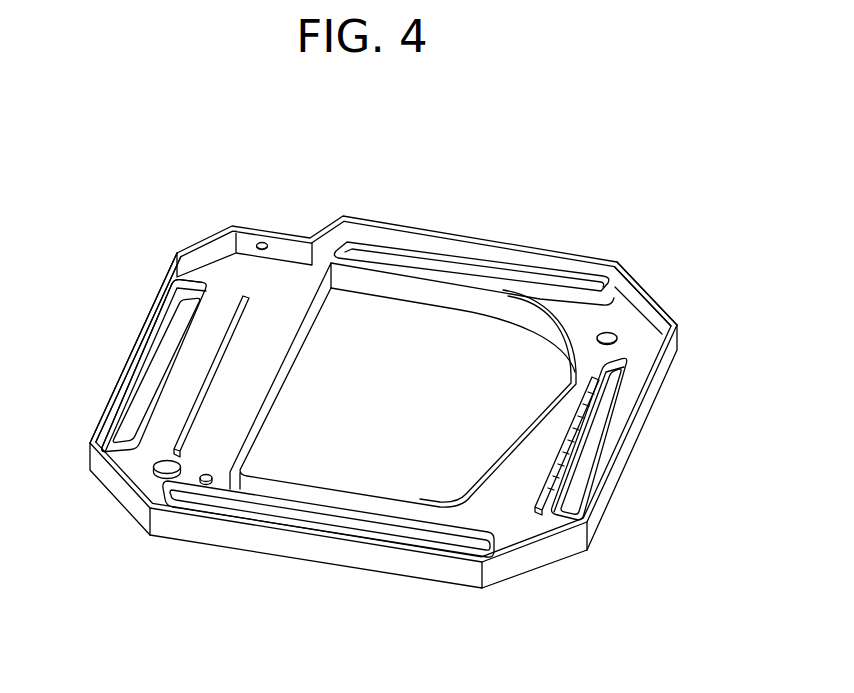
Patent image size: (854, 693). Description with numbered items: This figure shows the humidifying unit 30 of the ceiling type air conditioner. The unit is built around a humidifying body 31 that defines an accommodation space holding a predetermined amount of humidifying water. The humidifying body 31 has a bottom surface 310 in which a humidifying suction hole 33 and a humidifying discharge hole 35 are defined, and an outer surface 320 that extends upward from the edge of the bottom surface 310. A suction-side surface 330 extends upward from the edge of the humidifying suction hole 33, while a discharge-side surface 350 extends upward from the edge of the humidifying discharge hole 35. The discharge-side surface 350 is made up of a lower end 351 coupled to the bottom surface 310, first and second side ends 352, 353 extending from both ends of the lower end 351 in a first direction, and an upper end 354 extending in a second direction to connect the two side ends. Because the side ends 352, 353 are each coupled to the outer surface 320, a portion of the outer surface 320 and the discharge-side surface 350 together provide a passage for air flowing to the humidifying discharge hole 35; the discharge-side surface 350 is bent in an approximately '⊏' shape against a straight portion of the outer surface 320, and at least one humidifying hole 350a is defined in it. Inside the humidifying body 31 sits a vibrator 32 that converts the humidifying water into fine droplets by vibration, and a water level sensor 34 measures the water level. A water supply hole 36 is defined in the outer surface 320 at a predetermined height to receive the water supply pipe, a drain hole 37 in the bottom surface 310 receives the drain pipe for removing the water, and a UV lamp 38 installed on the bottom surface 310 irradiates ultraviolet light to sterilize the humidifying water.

The humidifying unit 30 is at (101, 134).
The humidifying body 31 is at (244, 204).
The vibrator 32 is at (162, 471).
The humidifying suction hole 33 is at (422, 333).
The suction-side surface 330 is at (366, 381).
The water level sensor 34 is at (206, 484).
The humidifying discharge hole 35 is at (373, 370).
The water supply hole 36 is at (262, 242).
The drain hole 37 is at (606, 335).
The UV lamp 38 is at (220, 323).
The bottom surface 310 is at (158, 443).
The outer surface 320 is at (632, 280).
The discharge-side surface 350 is at (600, 418).
The humidifying hole 350a is at (564, 288).
The lower end 351 is at (158, 411).
The first side end 352 is at (175, 290).
The second side end 353 is at (95, 447).
The upper end 354 is at (157, 399).